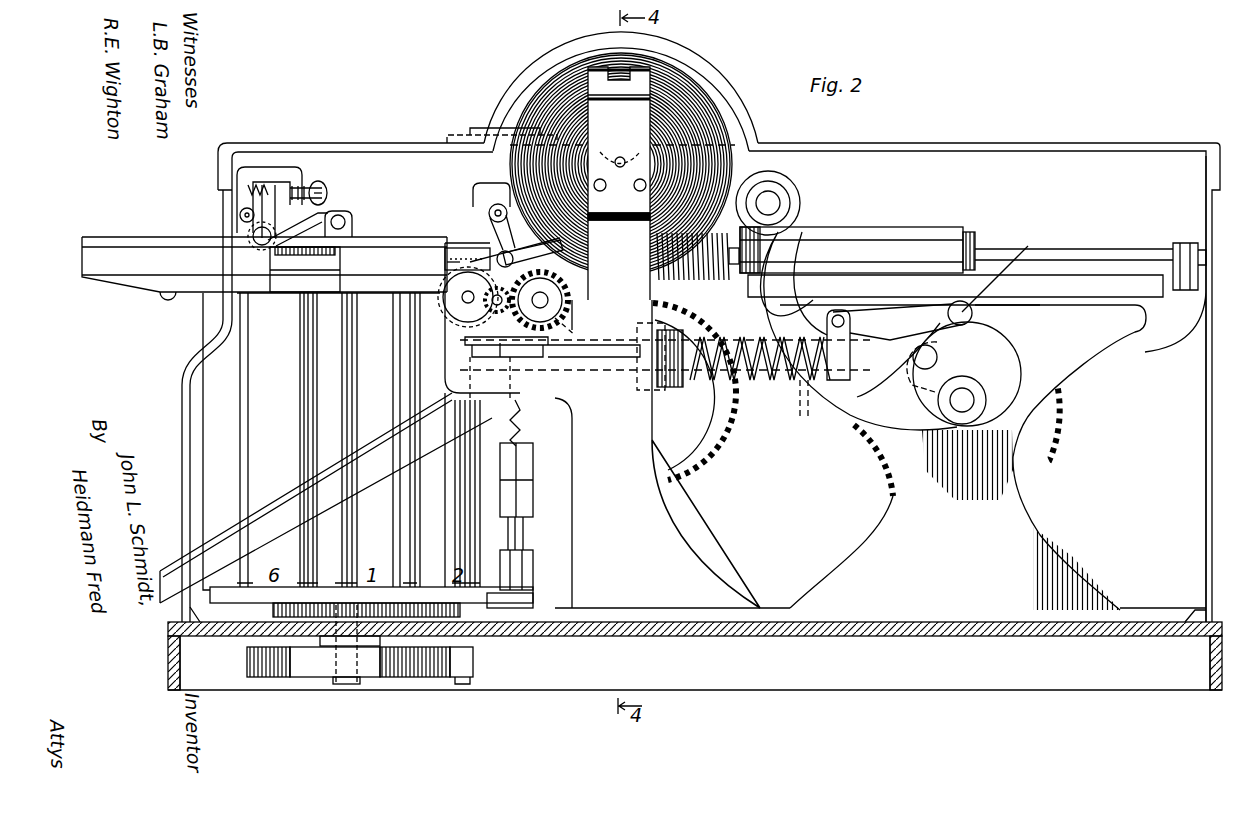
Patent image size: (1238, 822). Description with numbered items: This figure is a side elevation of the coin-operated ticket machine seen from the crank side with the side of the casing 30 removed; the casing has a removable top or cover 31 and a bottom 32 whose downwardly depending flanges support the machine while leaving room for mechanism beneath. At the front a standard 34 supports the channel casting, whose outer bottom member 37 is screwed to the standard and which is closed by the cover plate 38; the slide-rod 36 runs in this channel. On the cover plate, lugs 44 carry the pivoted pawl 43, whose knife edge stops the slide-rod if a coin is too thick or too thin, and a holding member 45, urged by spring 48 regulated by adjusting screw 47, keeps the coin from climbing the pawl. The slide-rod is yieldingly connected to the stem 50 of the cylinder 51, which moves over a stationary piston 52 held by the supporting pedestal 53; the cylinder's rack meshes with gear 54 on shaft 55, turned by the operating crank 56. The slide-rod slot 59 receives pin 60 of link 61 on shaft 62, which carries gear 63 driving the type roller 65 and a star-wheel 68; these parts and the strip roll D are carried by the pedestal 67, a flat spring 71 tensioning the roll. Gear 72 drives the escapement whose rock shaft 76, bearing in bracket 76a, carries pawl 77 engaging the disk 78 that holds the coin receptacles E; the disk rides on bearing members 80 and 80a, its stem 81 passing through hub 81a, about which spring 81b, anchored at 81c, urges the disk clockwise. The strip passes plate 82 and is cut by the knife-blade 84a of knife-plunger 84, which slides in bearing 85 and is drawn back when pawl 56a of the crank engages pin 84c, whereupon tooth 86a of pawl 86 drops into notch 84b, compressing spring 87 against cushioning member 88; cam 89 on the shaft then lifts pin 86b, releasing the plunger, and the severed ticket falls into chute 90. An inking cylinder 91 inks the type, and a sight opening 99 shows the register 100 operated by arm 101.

The casing 30 is at (1205, 432).
The removable top or cover 31 is at (1020, 143).
The bottom 32 is at (1096, 636).
The standard 34 is at (185, 326).
The slide-rod 36 is at (467, 256).
The outer bottom member 37 is at (135, 282).
The cover member or plate 38 is at (215, 240).
The pawl 43 is at (320, 215).
The upwardly presented lugs 44 is at (352, 235).
The holding member 45 is at (270, 210).
The adjusting screw 47 is at (320, 190).
The spring 48 is at (250, 188).
The stem 50 is at (688, 272).
The cylinder 51 is at (892, 228).
The piston 52 is at (973, 245).
The supporting pedestal or frame 53 is at (955, 520).
The gear 54 is at (1050, 453).
The shaft 55 is at (1040, 380).
The operating crank 56 is at (918, 420).
The pawl 56a is at (932, 374).
The slot 59 is at (460, 250).
The pin 60 is at (530, 245).
The link 61 is at (535, 262).
The shaft 62 is at (560, 300).
The gear 63 is at (575, 282).
The roller 65 is at (478, 320).
The pedestal or bracket 67 is at (603, 454).
The star-wheel or four-toothed ratchet 68 is at (576, 335).
The flat spring 71 is at (630, 115).
The gear 72 is at (694, 391).
The shaft 76 is at (520, 523).
The bracket 76a is at (517, 495).
The pawl 77 is at (505, 608).
The disk 78 is at (230, 606).
The member 80 is at (305, 617).
The member 80a is at (280, 617).
The depending stem 81 is at (352, 683).
The stem or hub 81a is at (335, 685).
The spring 81b is at (395, 665).
The spring anchorage 81c is at (465, 685).
The plate 82 is at (500, 345).
The knife-plunger 84 is at (745, 368).
The knife-blade 84a is at (510, 355).
The notch 84b is at (802, 385).
The pin 84c is at (937, 355).
The bearing 85 is at (842, 355).
The pawl 86 is at (902, 320).
The tooth or projection 86a is at (890, 343).
The pin 86b is at (1007, 269).
The spring 87 is at (745, 335).
The washer or cushioning member 88 is at (656, 408).
The cam 89 is at (965, 400).
The chute 90 is at (326, 498).
The inking cylinder 91 is at (450, 290).
The sight opening 99 is at (455, 136).
The register 100 is at (480, 195).
The arm 101 is at (488, 214).
The ticket strip D is at (545, 92).
The coin-receiving receptacles E is at (341, 441).